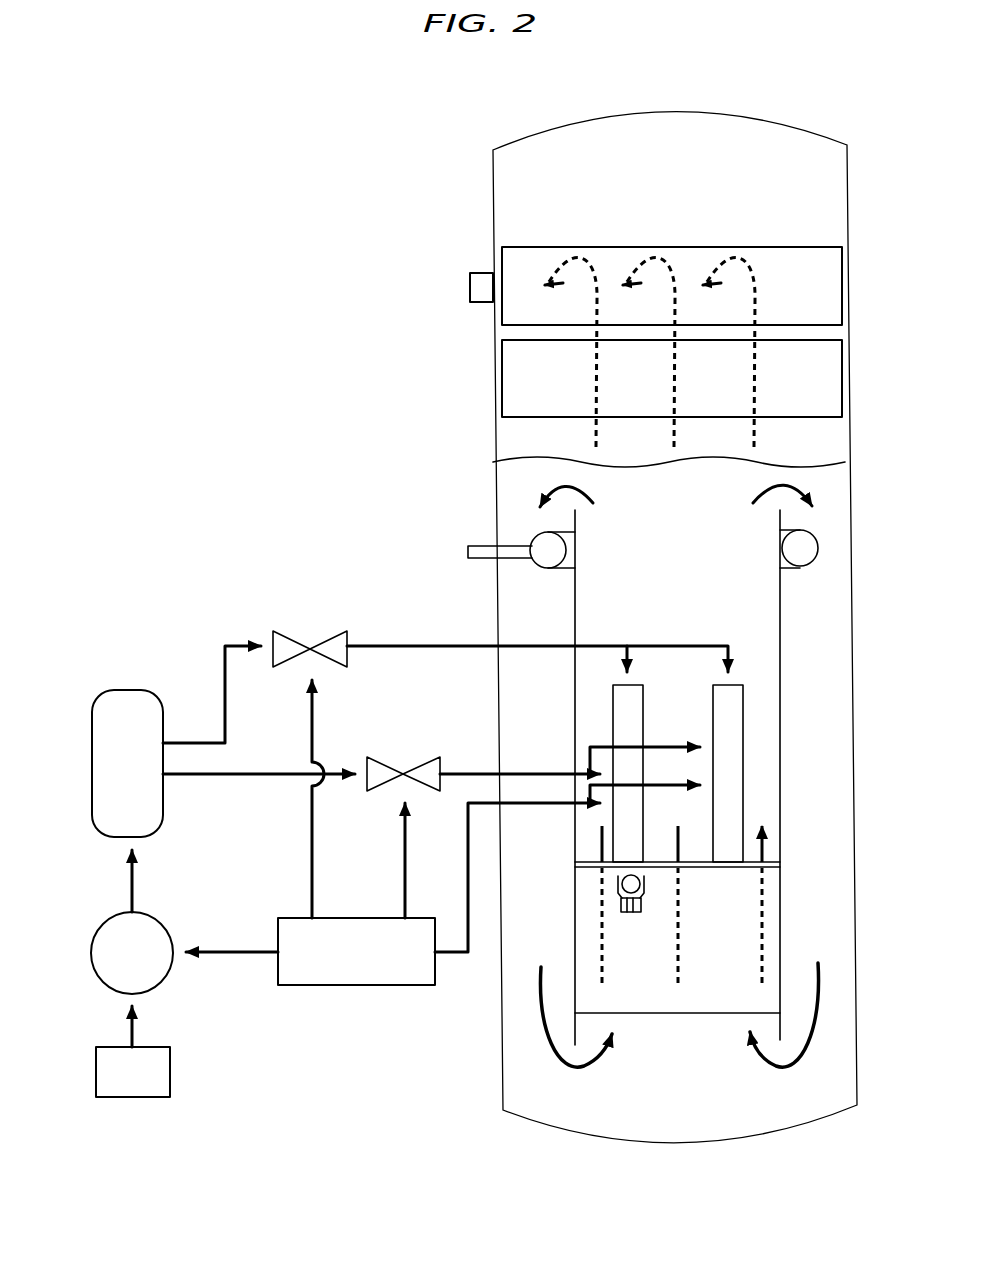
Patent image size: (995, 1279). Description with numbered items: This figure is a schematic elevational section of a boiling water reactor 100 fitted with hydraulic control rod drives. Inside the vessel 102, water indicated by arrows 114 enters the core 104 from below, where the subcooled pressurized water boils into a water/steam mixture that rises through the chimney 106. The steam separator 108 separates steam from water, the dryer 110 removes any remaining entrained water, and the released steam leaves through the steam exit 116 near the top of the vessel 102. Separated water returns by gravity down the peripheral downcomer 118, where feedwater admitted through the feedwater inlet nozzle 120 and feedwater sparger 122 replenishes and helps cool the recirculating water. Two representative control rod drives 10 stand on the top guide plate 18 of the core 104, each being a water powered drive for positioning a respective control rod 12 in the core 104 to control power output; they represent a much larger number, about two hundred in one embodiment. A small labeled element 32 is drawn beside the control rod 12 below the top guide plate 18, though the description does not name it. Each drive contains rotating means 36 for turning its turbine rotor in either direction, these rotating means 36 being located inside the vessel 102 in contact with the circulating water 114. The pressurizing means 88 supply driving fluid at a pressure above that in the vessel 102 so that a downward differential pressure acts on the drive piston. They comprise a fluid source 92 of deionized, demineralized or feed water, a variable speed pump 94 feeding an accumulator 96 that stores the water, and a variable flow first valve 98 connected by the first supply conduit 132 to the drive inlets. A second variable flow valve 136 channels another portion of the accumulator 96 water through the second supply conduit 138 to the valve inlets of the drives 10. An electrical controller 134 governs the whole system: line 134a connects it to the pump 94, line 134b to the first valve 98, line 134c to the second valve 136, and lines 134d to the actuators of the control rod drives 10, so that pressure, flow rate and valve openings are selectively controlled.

The reactor 100 is at (792, 124).
The vessel 102 is at (848, 420).
The core 104 is at (782, 912).
The chimney 106 is at (780, 708).
The steam separator 108 is at (842, 358).
The dryer 110 is at (848, 287).
The water flow arrows 114 is at (770, 1060).
The steam exit 116 is at (476, 272).
The peripheral downcomer 118 is at (553, 906).
The feedwater inlet nozzle 120 is at (497, 546).
The feedwater sparger 122 is at (820, 548).
The top guide plate 18 is at (772, 858).
The control rod drive 10 is at (703, 720).
The control rod 12 is at (641, 912).
The detector 32 is at (640, 882).
The first supply conduit 132 is at (440, 645).
The second supply conduit 138 is at (466, 771).
The first valve 98 is at (310, 647).
The pressurizing means 88 is at (271, 612).
The rotating means 36 is at (378, 750).
The second valve 136 is at (386, 793).
The accumulator 96 is at (107, 690).
The pump 94 is at (110, 920).
The fluid source 92 is at (118, 1097).
The electrical controller 134 is at (360, 986).
The electrical line 134a is at (228, 950).
The electrical line 134b is at (312, 872).
The electrical line 134c is at (405, 865).
The electrical lines 134d is at (468, 880).